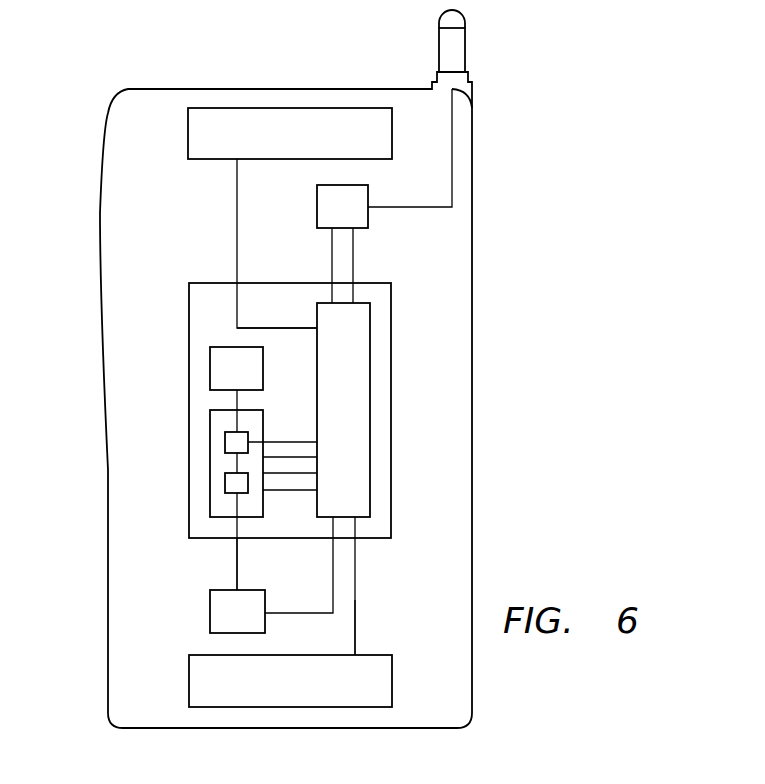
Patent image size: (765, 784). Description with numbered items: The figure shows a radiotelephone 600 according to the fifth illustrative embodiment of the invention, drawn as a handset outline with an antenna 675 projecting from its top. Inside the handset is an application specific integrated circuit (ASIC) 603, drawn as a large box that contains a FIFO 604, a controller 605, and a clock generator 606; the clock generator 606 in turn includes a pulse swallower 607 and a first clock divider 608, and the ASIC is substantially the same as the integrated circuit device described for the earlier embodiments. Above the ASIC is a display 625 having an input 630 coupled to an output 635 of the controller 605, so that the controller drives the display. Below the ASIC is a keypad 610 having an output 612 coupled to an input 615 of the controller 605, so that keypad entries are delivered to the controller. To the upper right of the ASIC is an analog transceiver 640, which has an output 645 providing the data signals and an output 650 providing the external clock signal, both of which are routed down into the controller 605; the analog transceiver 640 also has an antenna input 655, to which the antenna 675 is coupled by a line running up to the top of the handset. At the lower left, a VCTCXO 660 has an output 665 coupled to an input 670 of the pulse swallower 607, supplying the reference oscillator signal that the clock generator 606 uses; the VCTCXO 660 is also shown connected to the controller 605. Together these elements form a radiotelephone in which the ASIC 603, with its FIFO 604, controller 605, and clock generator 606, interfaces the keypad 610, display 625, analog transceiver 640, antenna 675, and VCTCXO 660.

The radiotelephone 600 is at (99, 247).
The antenna 675 is at (467, 50).
The display 625 is at (309, 144).
The input 630 is at (230, 164).
The analog transceiver 640 is at (317, 205).
The antenna input 655 is at (403, 191).
The output 650 is at (327, 236).
The output 645 is at (360, 236).
The application specific integrated circuit 603 is at (189, 405).
The controller 605 is at (370, 408).
The output 635 is at (312, 327).
The FIFO 604 is at (210, 368).
The clock generator 606 is at (210, 468).
The first clock divider 608 is at (225, 442).
The pulse swallower 607 is at (225, 483).
The input 670 is at (243, 502).
The output 665 is at (230, 585).
The VCTCXO 660 is at (210, 613).
The input 615 is at (358, 520).
The output 612 is at (387, 640).
The keypad 610 is at (310, 694).